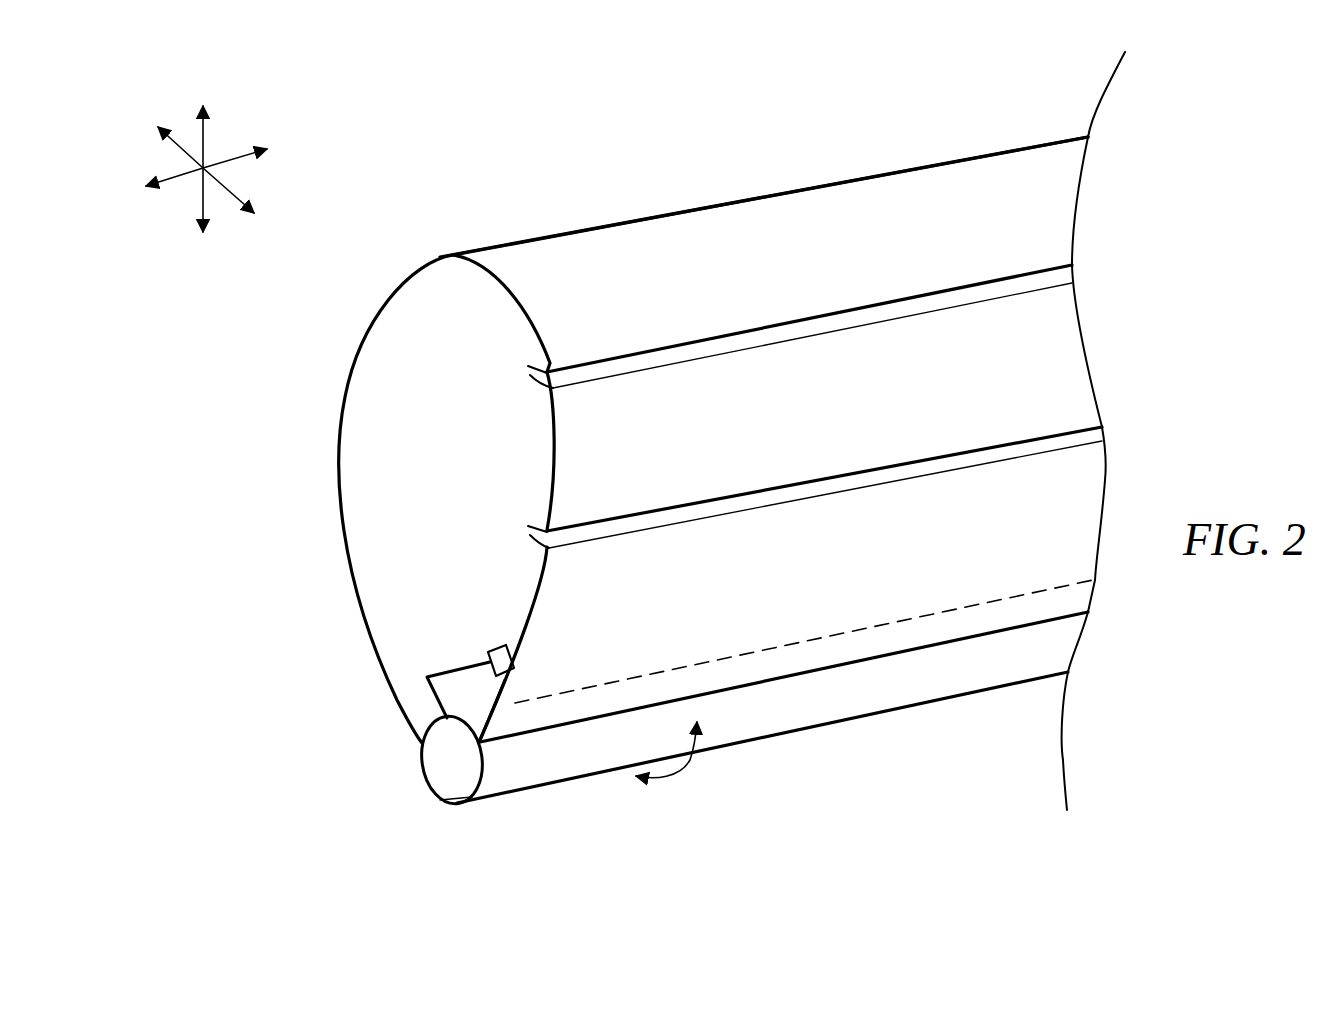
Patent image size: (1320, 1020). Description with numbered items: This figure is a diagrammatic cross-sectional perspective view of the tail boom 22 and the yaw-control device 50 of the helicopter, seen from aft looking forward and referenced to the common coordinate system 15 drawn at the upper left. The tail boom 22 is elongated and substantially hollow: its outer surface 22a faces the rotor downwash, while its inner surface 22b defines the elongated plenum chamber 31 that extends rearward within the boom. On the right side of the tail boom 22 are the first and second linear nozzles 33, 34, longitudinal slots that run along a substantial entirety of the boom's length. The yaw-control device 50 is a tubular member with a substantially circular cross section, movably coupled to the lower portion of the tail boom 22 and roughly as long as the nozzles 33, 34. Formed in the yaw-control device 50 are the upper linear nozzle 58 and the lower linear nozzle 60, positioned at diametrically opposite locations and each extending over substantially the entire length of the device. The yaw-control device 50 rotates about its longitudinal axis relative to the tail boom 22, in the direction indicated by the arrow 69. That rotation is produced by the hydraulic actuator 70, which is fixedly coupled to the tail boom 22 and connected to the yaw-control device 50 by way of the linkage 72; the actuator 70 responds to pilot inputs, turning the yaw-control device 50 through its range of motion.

The coordinate system 15 is at (205, 166).
The tail boom 22 is at (651, 190).
The outer surface 22a is at (563, 257).
The inner surface 22b is at (382, 352).
The plenum chamber 31 is at (455, 443).
The first linear nozzle 33 is at (712, 347).
The second linear nozzle 34 is at (723, 503).
The yaw-control device 50 is at (828, 724).
The upper linear nozzle 58 is at (440, 720).
The lower linear nozzle 60 is at (460, 806).
The arrow 69 is at (690, 774).
The hydraulic actuator 70 is at (508, 650).
The linkage 72 is at (460, 665).